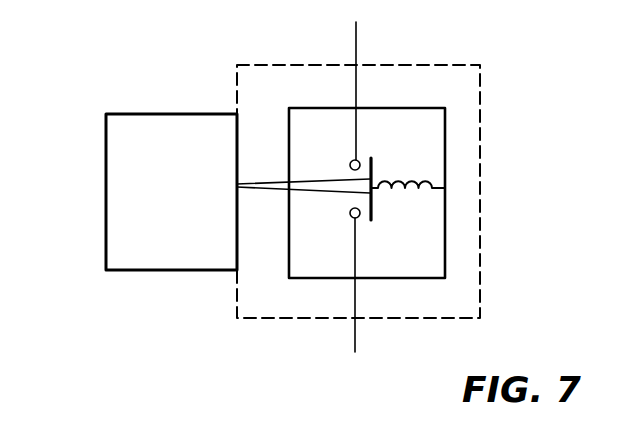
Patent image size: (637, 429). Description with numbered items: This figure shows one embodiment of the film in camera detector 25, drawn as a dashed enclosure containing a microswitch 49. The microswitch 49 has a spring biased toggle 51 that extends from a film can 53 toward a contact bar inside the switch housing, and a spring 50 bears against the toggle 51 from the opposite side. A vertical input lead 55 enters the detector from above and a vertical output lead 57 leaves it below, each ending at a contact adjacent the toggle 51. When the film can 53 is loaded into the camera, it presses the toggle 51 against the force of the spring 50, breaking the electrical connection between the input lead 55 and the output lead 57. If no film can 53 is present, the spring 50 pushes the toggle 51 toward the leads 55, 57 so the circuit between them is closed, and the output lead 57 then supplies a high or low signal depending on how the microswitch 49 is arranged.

The film in camera detector 25 is at (481, 137).
The microswitch 49 is at (433, 250).
The spring 50 is at (400, 184).
The spring biased toggle 51 is at (270, 190).
The film can 53 is at (112, 199).
The input lead 55 is at (357, 42).
The output lead 57 is at (357, 332).